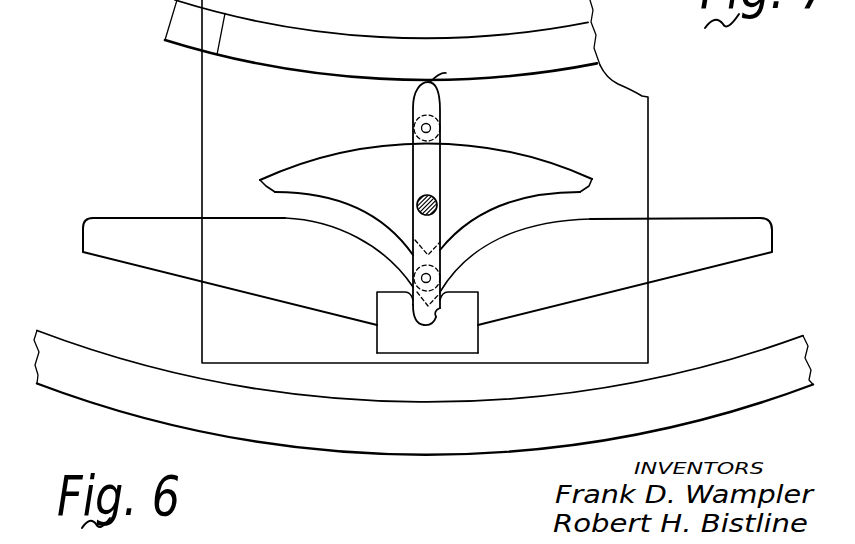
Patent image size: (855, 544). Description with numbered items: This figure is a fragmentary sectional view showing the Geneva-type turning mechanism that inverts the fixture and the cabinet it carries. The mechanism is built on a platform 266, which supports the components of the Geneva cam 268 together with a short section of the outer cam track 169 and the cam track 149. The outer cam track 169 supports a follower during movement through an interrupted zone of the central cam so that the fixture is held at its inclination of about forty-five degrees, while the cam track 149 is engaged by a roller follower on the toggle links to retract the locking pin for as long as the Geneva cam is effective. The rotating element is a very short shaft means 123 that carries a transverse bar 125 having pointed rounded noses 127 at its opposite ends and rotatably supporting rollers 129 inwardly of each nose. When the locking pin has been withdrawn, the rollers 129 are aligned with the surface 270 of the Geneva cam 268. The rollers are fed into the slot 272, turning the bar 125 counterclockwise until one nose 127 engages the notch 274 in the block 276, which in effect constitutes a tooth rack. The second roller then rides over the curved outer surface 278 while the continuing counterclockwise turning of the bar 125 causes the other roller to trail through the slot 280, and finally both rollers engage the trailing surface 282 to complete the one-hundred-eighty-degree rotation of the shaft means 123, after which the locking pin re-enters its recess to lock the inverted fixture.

The shaft means 123 is at (434, 197).
The transverse bar 125 is at (418, 167).
The pointed rounded noses 127 is at (446, 73).
The rollers 129 is at (413, 108).
The cam track 149 is at (230, 50).
The outer cam track 169 is at (113, 356).
The platform 266 is at (210, 113).
The Geneva cam 268 is at (263, 183).
The surface 270 is at (727, 217).
The slot 272 is at (568, 206).
The notch 274 is at (437, 312).
The block 276 is at (453, 343).
The curved outer surface 278 is at (522, 154).
The slot 280 is at (312, 205).
The trailing surface 282 is at (116, 216).